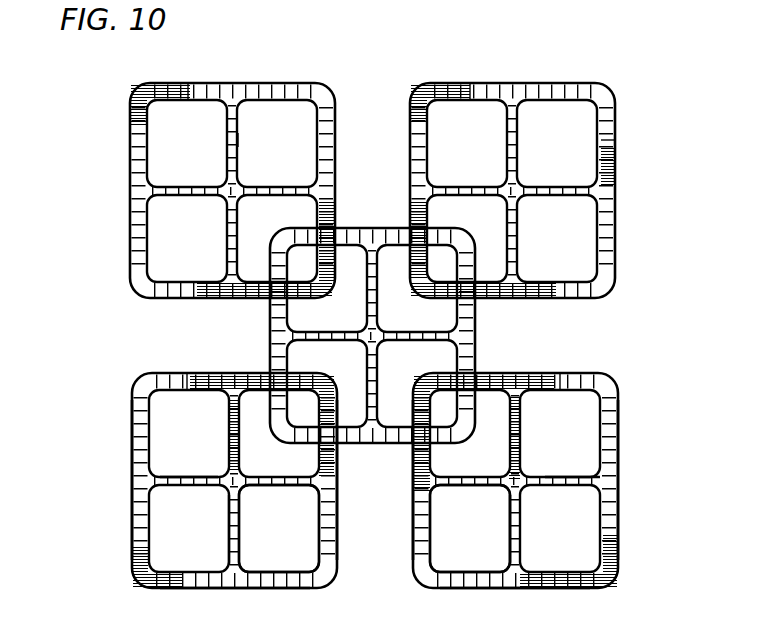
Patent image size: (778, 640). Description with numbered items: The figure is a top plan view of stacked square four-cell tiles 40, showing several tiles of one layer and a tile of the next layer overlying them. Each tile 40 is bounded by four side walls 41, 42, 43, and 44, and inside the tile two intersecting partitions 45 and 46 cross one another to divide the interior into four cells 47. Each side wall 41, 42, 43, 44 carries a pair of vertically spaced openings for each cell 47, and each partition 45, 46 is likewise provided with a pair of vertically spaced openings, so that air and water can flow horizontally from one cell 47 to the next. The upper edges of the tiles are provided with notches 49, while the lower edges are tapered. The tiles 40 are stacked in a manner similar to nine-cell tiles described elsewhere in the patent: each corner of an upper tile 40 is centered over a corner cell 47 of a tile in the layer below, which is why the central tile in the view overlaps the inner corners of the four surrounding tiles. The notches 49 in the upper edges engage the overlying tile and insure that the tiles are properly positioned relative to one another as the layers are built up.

The square four-cell tile 40 is at (322, 97).
The side wall 41 is at (195, 590).
The side wall 42 is at (132, 428).
The side wall 43 is at (187, 380).
The side wall 44 is at (335, 533).
The partition 45 is at (173, 478).
The partition 46 is at (232, 546).
The cell 47 is at (282, 553).
The notch 49 is at (188, 87).